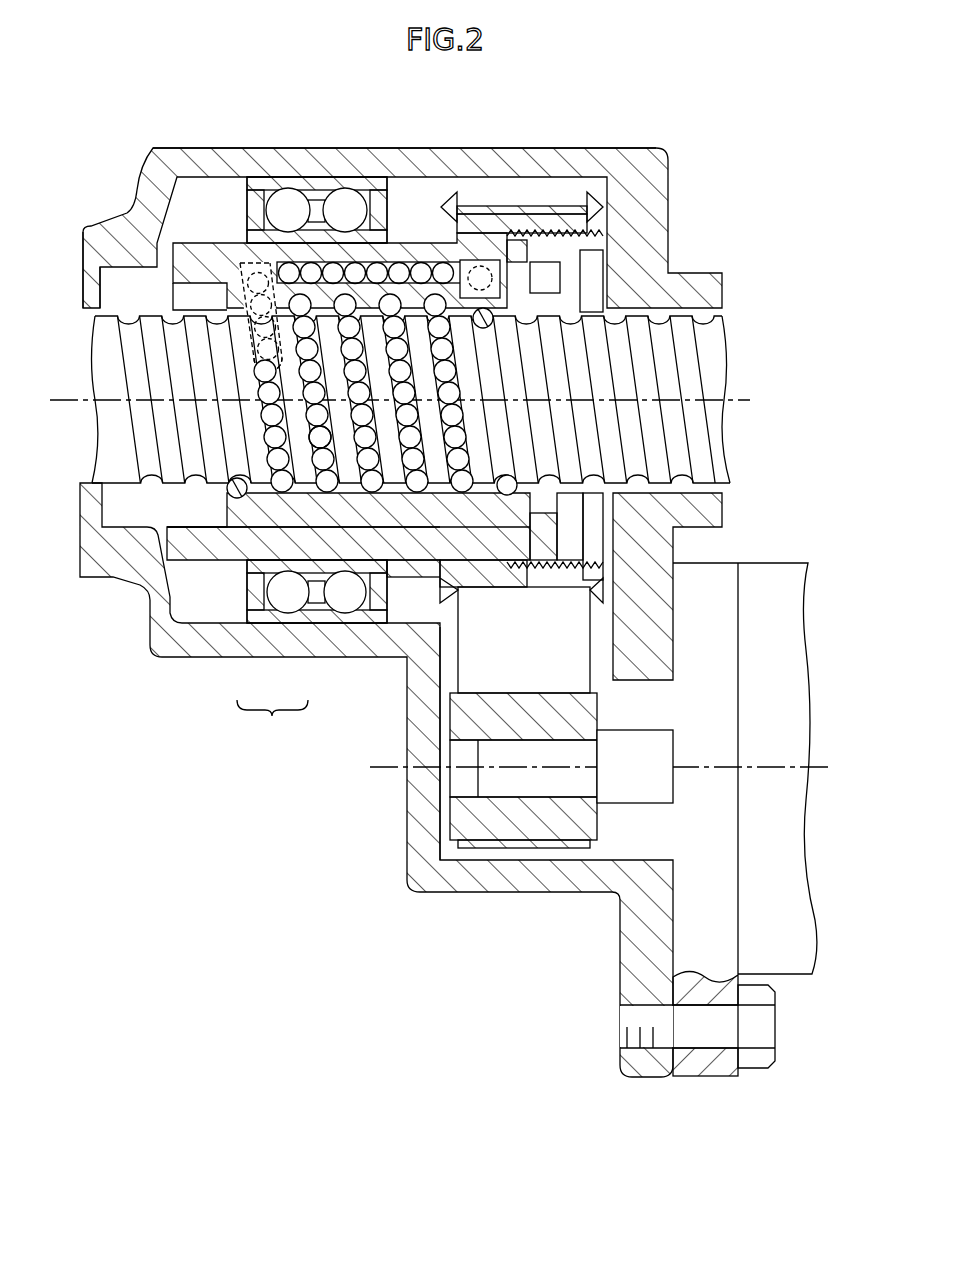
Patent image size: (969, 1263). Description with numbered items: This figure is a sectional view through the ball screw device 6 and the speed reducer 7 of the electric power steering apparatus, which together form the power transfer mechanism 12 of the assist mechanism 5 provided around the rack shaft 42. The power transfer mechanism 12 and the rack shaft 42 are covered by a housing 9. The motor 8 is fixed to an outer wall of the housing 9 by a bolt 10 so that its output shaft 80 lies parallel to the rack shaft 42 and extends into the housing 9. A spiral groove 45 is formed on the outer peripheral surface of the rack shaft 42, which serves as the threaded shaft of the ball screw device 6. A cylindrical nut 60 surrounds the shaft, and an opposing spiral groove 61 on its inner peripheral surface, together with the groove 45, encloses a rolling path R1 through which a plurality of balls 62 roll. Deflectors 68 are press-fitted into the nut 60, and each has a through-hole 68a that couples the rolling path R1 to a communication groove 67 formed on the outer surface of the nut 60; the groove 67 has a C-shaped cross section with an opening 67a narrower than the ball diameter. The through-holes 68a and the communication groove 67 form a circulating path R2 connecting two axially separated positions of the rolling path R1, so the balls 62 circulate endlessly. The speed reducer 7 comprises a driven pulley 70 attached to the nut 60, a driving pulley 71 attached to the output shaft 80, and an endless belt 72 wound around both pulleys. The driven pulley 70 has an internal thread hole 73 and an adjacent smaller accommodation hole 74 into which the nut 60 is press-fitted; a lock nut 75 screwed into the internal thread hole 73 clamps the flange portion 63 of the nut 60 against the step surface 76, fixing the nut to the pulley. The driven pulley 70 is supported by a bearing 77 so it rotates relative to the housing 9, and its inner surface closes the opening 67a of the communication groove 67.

The assist mechanism 5 is at (681, 158).
The housing 9 is at (521, 148).
The bearing 77 is at (288, 185).
The circulating path R2 is at (396, 263).
The opening 67a is at (418, 262).
The deflector 68 is at (458, 262).
The through-hole 68a is at (258, 268).
The communication groove 67 is at (403, 262).
The rack shaft 42 is at (90, 318).
The spiral groove 45 is at (125, 368).
The cylindrical nut 60 is at (205, 497).
The spiral groove 61 is at (322, 487).
The rolling path R1 is at (323, 448).
The balls 62 is at (352, 490).
The lock nut 75 is at (567, 522).
The driven pulley 70 is at (213, 562).
The accommodation hole 74 is at (481, 555).
The step surface 76 is at (508, 566).
The internal thread hole 73 is at (556, 570).
The flange portion 63 is at (530, 590).
The ball screw device 6 is at (232, 538).
The speed reducer 7 is at (456, 652).
The power transfer mechanism 12 is at (272, 720).
The endless belt 72 is at (408, 701).
The driving pulley 71 is at (445, 813).
The output shaft 80 is at (662, 816).
The motor 8 is at (799, 974).
The bolt 10 is at (776, 1040).